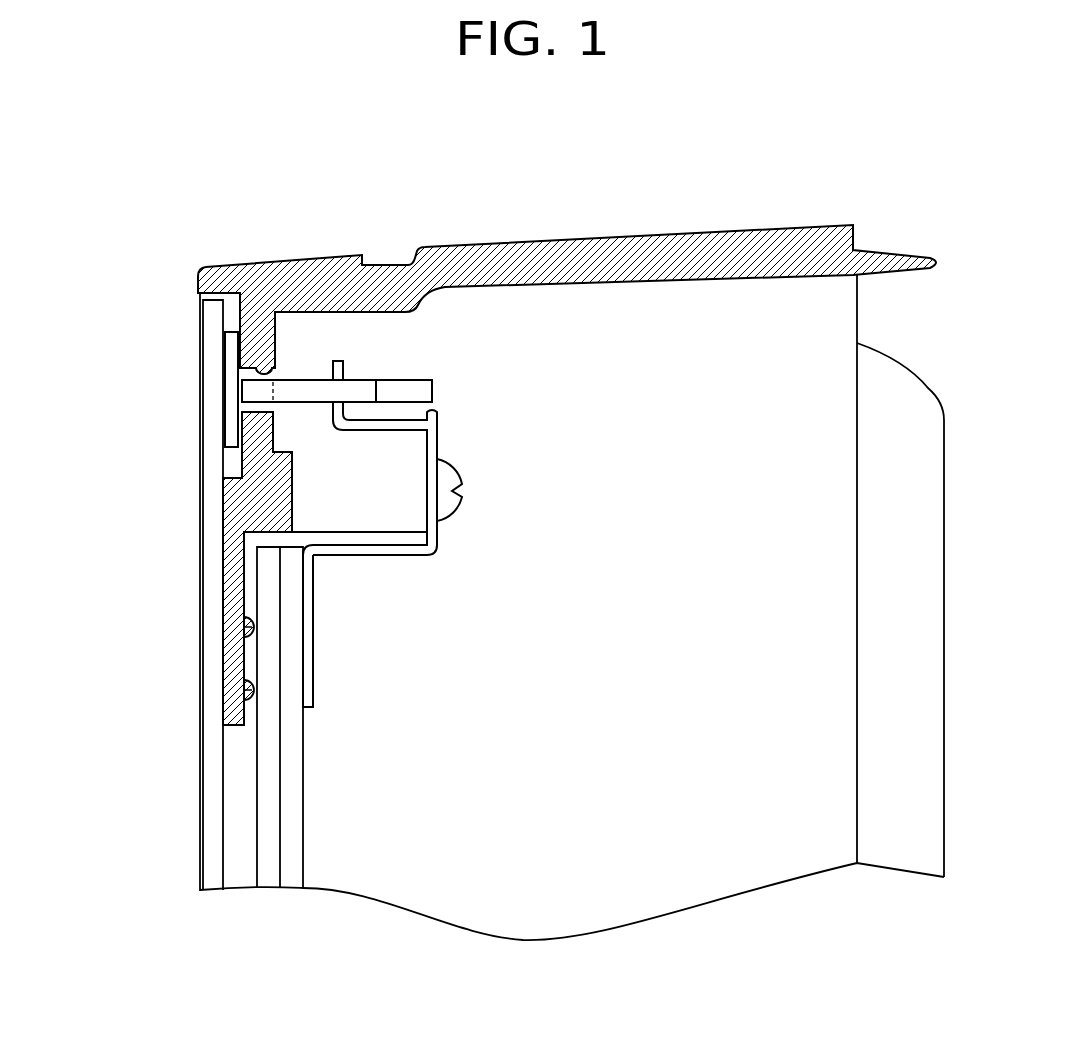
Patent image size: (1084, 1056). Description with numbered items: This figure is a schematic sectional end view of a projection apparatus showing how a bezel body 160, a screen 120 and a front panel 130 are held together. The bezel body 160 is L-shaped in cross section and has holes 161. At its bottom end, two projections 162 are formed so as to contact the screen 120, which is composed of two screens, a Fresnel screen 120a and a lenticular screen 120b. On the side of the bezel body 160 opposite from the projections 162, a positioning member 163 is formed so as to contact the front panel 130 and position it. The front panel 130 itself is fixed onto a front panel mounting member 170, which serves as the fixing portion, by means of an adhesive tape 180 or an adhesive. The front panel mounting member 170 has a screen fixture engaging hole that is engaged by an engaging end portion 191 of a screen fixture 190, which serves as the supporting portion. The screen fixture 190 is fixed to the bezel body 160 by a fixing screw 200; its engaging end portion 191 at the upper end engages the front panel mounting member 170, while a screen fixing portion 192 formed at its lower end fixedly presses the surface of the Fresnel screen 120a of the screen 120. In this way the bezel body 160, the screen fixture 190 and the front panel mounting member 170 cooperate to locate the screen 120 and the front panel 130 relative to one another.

The screen 120 is at (378, 710).
The Fresnel screen 120a is at (290, 828).
The lenticular screen 120b is at (272, 748).
The front panel 130 is at (208, 608).
The bezel body 160 is at (263, 262).
The holes 161 is at (276, 380).
The projections 162 is at (240, 692).
The positioning member 163 is at (230, 498).
The front panel mounting member 170 is at (420, 392).
The adhesive tape 180 is at (215, 372).
The screen fixture 190 is at (438, 530).
The engaging end portion 191 is at (343, 368).
The screen fixing portion 192 is at (306, 605).
The fixing screw 200 is at (455, 458).